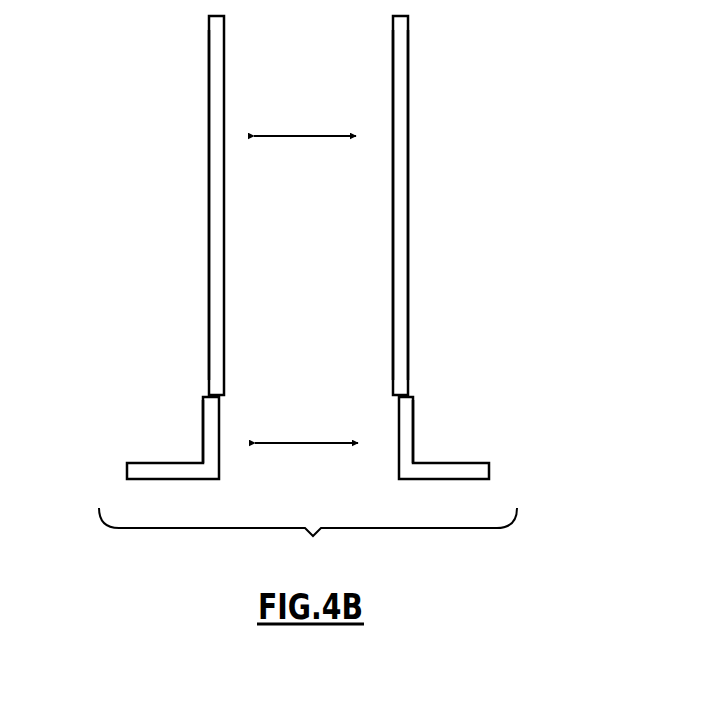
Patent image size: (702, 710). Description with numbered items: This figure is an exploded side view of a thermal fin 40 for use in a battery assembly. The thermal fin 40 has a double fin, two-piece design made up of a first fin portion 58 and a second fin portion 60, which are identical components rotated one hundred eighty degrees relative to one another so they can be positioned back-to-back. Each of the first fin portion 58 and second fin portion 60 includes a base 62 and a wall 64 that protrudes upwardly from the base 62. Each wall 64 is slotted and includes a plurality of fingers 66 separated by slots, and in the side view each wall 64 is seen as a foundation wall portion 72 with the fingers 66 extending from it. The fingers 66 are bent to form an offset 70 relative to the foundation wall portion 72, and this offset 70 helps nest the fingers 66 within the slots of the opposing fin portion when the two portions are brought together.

The thermal fin 40 is at (308, 538).
The first fin portion 58 is at (181, 168).
The second fin portion 60 is at (437, 167).
The base 62 is at (145, 455).
The wall 64 is at (414, 278).
The finger 66 is at (216, 62).
The offset 70 is at (221, 399).
The foundation wall portion 72 is at (212, 440).